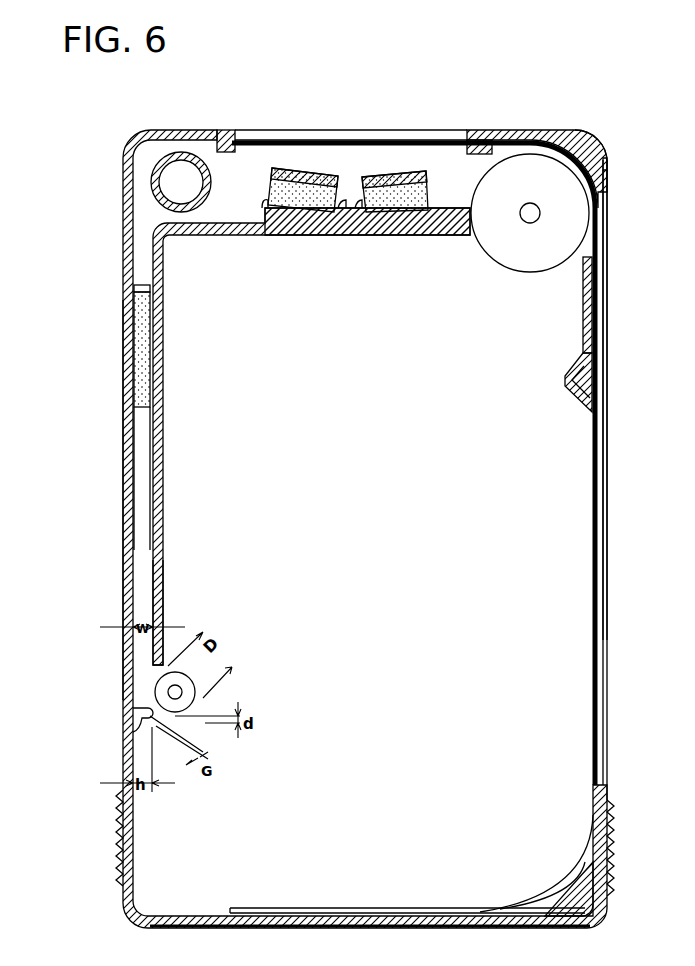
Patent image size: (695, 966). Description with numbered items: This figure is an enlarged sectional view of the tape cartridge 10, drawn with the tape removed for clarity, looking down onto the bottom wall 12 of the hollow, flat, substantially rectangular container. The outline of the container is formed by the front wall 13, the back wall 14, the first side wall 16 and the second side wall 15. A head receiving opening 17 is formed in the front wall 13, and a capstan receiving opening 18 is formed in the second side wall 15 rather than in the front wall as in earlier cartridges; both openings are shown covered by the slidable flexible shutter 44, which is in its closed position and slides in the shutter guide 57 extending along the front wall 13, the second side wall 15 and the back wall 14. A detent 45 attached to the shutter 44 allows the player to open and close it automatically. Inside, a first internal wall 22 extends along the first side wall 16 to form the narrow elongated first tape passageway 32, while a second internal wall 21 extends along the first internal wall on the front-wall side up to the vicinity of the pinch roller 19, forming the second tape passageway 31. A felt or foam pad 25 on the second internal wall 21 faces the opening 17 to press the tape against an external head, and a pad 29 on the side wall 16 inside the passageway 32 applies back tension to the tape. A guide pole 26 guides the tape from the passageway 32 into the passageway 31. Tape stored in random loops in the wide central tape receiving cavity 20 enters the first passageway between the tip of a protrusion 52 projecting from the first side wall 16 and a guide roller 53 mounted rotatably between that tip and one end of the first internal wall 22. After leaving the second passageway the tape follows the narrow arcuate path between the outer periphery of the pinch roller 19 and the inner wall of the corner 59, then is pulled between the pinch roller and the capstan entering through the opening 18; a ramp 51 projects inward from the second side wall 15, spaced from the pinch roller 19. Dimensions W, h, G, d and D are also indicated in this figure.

The tape cartridge 10 is at (42, 518).
The bottom wall 12 is at (567, 690).
The front wall 13 is at (228, 135).
The back wall 14 is at (200, 928).
The second side wall 15 is at (603, 288).
The first side wall 16 is at (127, 462).
The head receiving opening 17 is at (347, 140).
The capstan receiving opening 18 is at (605, 212).
The pinch roller 19 is at (518, 260).
The tape receiving cavity 20 is at (388, 413).
The second internal wall 21 is at (279, 228).
The first internal wall 22 is at (155, 548).
The pad 25 is at (322, 208).
The guide pole 26 is at (178, 168).
The pad 29 is at (135, 352).
The second tape passageway 31 is at (252, 170).
The first tape passageway 32 is at (143, 596).
The shutter 44 is at (447, 143).
The detent 45 is at (605, 165).
The ramp 51 is at (592, 372).
The protrusion 52 is at (138, 722).
The guide roller 53 is at (168, 692).
The shutter guide 57 is at (425, 926).
The corner 59 is at (596, 138).